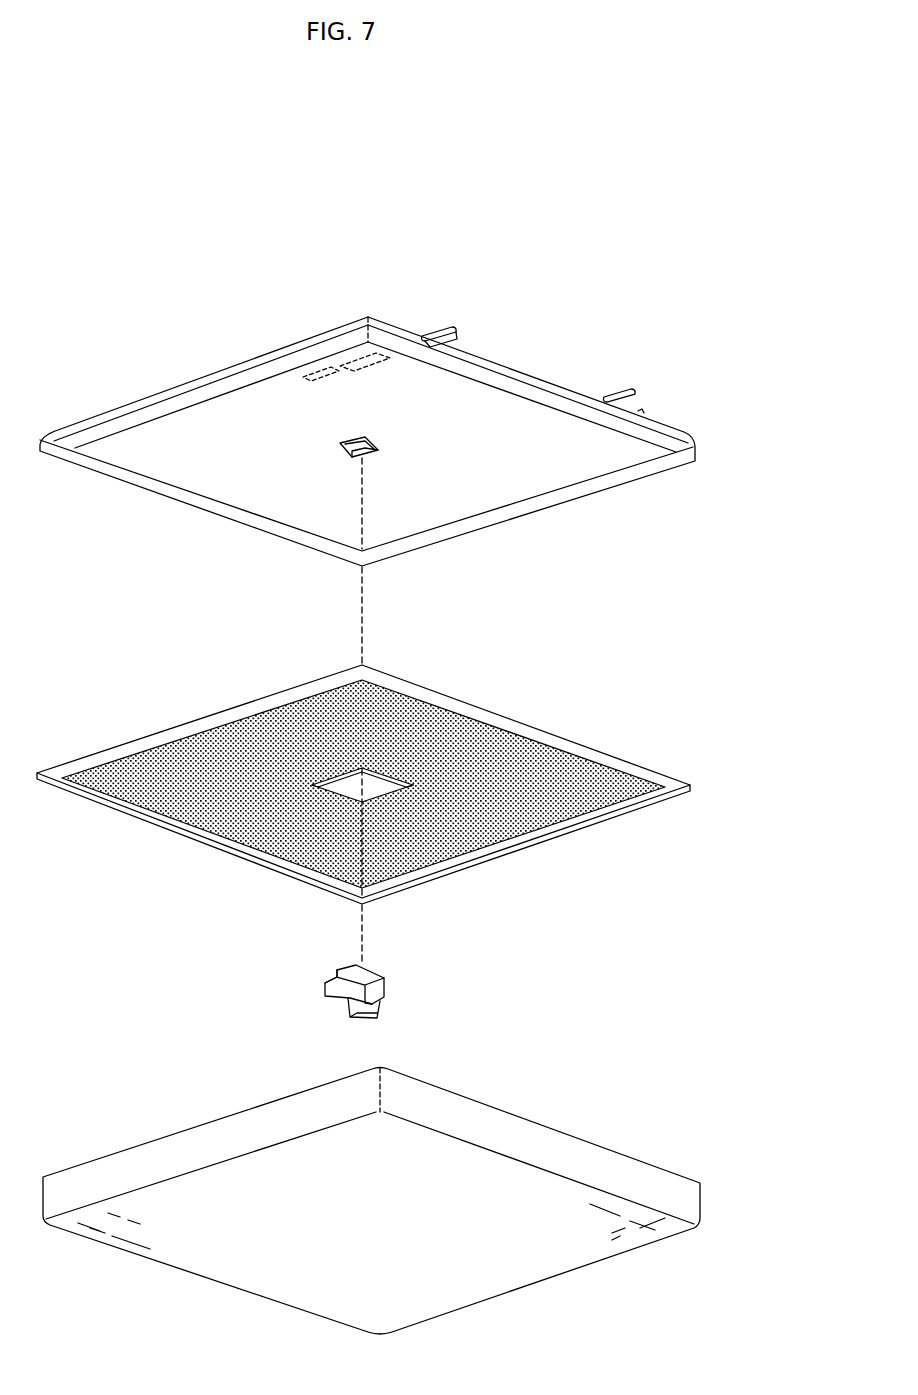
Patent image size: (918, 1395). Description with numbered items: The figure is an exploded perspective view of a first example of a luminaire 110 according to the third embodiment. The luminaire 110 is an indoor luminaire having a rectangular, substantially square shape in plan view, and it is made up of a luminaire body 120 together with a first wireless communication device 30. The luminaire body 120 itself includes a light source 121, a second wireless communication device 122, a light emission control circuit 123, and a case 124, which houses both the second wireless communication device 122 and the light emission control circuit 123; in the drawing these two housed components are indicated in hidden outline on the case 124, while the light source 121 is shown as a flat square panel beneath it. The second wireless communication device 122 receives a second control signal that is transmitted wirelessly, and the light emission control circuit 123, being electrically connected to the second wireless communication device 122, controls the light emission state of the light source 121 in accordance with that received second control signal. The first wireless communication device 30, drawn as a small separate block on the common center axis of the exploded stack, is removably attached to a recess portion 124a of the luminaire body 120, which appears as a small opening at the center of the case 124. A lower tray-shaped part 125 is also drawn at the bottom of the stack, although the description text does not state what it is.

The luminaire 110 is at (641, 237).
The luminaire body 120 is at (534, 321).
The light source 121 is at (547, 734).
The second wireless communication device 122 is at (347, 345).
The light emission control circuit 123 is at (307, 347).
The case 124 is at (393, 331).
The recess portion 124a is at (379, 458).
The bottom cover 125 is at (550, 1142).
The first wireless communication device 30 is at (402, 980).